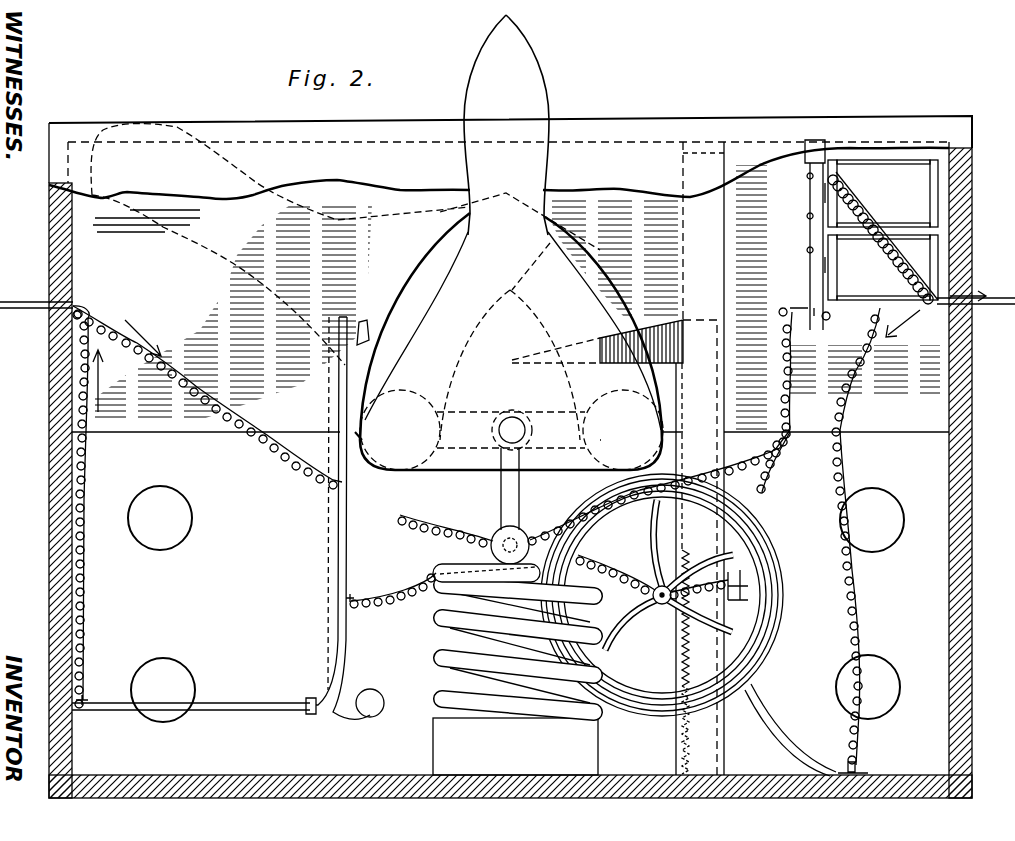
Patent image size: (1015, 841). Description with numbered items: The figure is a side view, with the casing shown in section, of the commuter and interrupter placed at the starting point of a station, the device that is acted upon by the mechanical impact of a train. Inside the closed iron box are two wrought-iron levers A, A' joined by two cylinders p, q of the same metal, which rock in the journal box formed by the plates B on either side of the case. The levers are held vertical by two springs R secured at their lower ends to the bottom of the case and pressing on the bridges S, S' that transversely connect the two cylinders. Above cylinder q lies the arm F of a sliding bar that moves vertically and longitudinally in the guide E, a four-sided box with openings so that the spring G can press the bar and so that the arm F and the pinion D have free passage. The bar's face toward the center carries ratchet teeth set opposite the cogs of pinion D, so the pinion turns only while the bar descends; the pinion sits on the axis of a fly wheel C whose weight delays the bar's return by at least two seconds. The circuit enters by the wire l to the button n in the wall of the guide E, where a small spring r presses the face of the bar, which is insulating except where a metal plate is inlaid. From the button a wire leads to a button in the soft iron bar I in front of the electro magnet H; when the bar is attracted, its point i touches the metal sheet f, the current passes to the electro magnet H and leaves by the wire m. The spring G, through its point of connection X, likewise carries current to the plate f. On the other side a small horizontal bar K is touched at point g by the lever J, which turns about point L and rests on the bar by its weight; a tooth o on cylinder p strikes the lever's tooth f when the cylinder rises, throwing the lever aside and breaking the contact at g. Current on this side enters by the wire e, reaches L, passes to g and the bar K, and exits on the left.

The lever A is at (511, 242).
The lever A' is at (345, 244).
The plate B is at (510, 457).
The fly wheel C is at (662, 595).
The pinion D is at (669, 575).
The guide E is at (703, 458).
The arm F is at (597, 341).
The spring G is at (790, 730).
The electro magnet H is at (881, 230).
The bar of soft iron I is at (805, 240).
The lever J is at (350, 518).
The bar K is at (191, 694).
The point L is at (336, 600).
The spring R is at (515, 669).
The bridge S is at (511, 487).
The bridge S' is at (574, 432).
The point of connection X is at (848, 758).
The wire e is at (682, 531).
The chain e' is at (58, 505).
The metal sheet f is at (830, 312).
The point g is at (307, 715).
The point i is at (801, 301).
The wire l is at (334, 436).
The wire m is at (918, 238).
The button n is at (738, 594).
The tooth o is at (354, 446).
The cylinder p is at (400, 430).
The cylinder q is at (623, 430).
The spring r is at (699, 597).